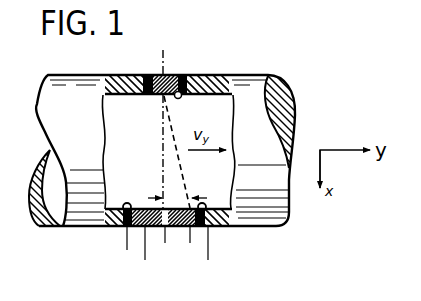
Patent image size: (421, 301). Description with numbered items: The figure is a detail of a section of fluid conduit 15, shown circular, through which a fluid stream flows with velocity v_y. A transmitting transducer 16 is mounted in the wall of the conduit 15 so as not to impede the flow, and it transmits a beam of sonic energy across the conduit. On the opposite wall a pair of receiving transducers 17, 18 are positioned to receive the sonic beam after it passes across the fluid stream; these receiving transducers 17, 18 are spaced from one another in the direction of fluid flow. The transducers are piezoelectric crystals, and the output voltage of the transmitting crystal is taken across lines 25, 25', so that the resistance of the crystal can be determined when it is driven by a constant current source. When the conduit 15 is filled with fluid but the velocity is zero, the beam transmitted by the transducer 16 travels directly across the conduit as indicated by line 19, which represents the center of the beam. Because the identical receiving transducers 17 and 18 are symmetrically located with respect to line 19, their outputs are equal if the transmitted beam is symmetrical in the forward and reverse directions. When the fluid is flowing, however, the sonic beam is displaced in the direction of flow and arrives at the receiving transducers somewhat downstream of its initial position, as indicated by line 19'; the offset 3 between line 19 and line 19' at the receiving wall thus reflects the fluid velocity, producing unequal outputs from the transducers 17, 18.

The fluid conduit 15 is at (210, 75).
The transmitting transducer 16 is at (152, 73).
The receiving transducer 17 is at (130, 228).
The receiving transducer 18 is at (203, 228).
The beam center line 19 is at (146, 146).
The displaced beam line 19' is at (193, 152).
The output line 25 is at (165, 63).
The output line 25' is at (193, 68).
The beam displacement distance 3 is at (165, 195).